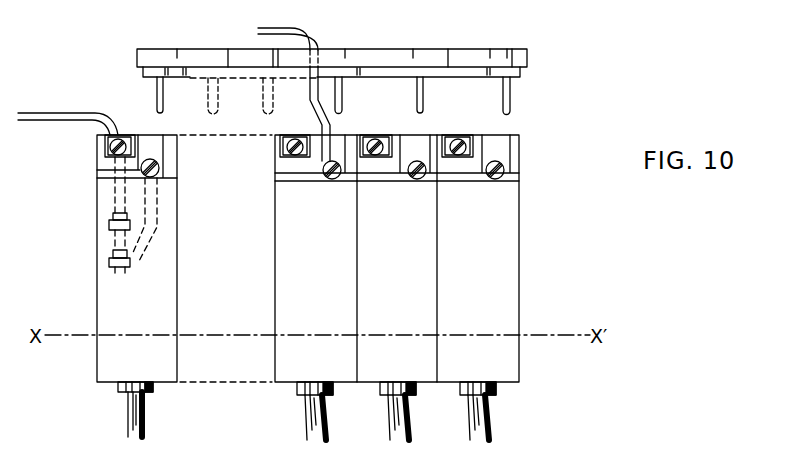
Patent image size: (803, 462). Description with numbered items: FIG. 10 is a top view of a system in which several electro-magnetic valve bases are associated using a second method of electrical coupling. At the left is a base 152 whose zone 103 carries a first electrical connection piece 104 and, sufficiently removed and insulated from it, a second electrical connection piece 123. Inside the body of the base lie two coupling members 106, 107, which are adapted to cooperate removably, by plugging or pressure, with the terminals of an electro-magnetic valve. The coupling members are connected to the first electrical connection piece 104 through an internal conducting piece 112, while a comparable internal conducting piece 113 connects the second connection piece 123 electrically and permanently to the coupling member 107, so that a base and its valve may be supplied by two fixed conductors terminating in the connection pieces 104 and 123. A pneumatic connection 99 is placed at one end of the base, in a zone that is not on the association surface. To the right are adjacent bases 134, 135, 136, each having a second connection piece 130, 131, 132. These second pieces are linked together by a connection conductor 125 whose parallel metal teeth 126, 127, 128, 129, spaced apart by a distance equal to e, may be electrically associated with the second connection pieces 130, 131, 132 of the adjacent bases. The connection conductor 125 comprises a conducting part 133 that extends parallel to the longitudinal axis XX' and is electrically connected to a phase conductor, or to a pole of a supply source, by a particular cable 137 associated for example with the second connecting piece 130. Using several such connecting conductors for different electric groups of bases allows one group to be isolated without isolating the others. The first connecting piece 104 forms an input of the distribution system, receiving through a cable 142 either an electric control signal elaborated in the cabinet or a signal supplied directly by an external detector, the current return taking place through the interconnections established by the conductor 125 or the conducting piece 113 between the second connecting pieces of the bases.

The pneumatic connection 99 is at (118, 390).
The zone 103 is at (99, 163).
The electrical connection piece 104 is at (117, 133).
The coupling member 106 is at (113, 231).
The coupling member 107 is at (110, 273).
The internal conducting piece 112 is at (113, 198).
The internal conducting piece 113 is at (157, 209).
The second electrical connection piece 123 is at (177, 172).
The connection conductor 125 is at (555, 36).
The metal tooth 126 is at (163, 93).
The metal tooth 127 is at (342, 100).
The metal tooth 128 is at (423, 100).
The metal tooth 129 is at (511, 103).
The second connection piece 130 is at (338, 181).
The second connection piece 131 is at (420, 181).
The second connection piece 132 is at (494, 181).
The conducting part 133 is at (441, 72).
The adjacent base 134 is at (290, 358).
The adjacent base 135 is at (372, 358).
The adjacent base 136 is at (455, 358).
The cable 137 is at (302, 31).
The cable 142 is at (40, 115).
The base 152 is at (97, 252).